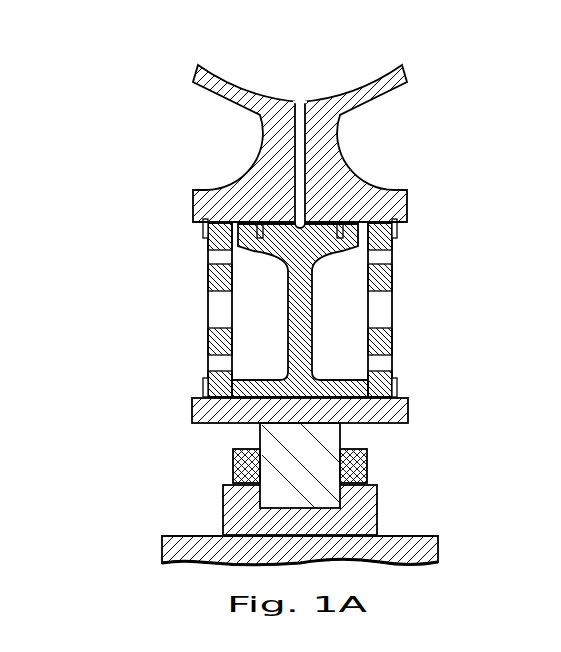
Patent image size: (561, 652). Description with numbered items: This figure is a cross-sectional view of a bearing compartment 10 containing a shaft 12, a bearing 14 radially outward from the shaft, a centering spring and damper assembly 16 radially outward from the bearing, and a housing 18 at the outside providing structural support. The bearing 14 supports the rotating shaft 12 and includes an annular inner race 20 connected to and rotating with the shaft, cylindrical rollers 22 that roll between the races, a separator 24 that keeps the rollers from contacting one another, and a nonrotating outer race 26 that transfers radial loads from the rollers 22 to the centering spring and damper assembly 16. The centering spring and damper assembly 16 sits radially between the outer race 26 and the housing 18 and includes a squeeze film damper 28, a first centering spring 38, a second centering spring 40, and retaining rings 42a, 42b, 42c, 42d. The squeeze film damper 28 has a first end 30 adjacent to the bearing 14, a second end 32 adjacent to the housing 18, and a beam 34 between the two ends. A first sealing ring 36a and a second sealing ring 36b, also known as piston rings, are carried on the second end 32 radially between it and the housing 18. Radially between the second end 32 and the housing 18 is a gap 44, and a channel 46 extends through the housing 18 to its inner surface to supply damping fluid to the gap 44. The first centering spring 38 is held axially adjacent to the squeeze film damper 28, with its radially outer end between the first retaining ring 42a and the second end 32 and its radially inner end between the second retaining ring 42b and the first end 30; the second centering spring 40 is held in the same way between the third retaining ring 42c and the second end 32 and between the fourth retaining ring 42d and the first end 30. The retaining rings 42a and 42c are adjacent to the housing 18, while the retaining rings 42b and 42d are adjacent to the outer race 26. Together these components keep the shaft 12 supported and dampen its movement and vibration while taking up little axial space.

The bearing compartment 10 is at (78, 70).
The shaft 12 is at (177, 547).
The bearing 14 is at (289, 479).
The centering spring and damper assembly 16 is at (274, 221).
The housing 18 is at (280, 126).
The inner race 20 is at (360, 508).
The rollers 22 is at (320, 438).
The separator 24 is at (357, 468).
The outer race 26 is at (383, 412).
The squeeze film damper 28 is at (301, 310).
The first end 30 is at (263, 381).
The second end 32 is at (280, 253).
The beam 34 is at (300, 330).
The first sealing ring 36a is at (340, 237).
The second sealing ring 36b is at (260, 237).
The first centering spring 38 is at (393, 272).
The second centering spring 40 is at (216, 313).
The first retaining ring 42a is at (397, 232).
The second retaining ring 42b is at (397, 388).
The third retaining ring 42c is at (204, 232).
The fourth retaining ring 42d is at (204, 388).
The gap 44 is at (283, 210).
The channel 46 is at (303, 87).